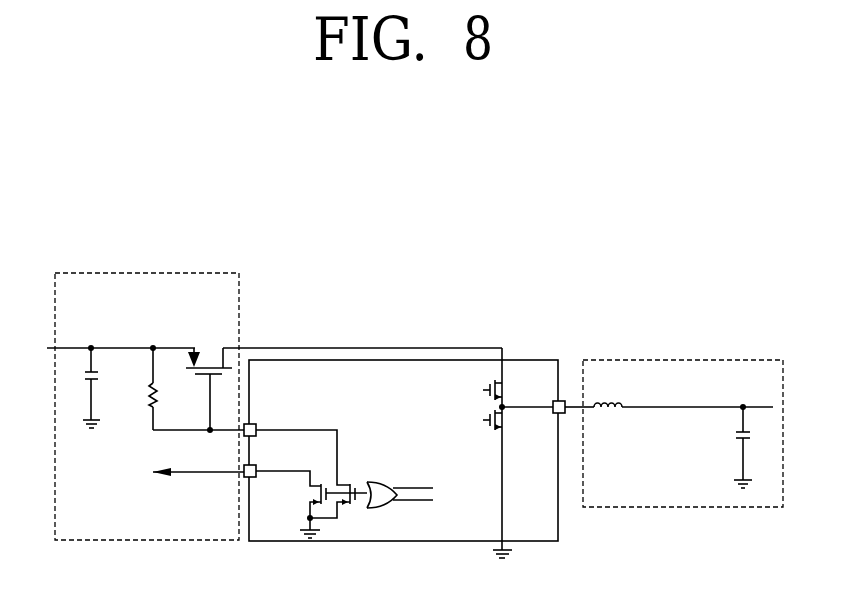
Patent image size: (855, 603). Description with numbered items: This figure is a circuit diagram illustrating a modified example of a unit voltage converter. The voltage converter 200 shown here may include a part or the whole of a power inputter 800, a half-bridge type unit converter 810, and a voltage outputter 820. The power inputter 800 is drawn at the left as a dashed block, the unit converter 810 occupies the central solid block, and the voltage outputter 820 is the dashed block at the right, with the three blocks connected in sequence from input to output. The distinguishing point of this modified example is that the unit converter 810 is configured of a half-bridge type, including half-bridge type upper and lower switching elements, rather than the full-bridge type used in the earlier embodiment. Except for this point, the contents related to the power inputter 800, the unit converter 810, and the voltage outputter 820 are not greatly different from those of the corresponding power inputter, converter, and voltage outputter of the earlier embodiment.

The voltage converter 200 is at (708, 203).
The power inputter 800 is at (147, 273).
The half-bridge type unit converter 810 is at (533, 341).
The voltage outputter 820 is at (683, 360).